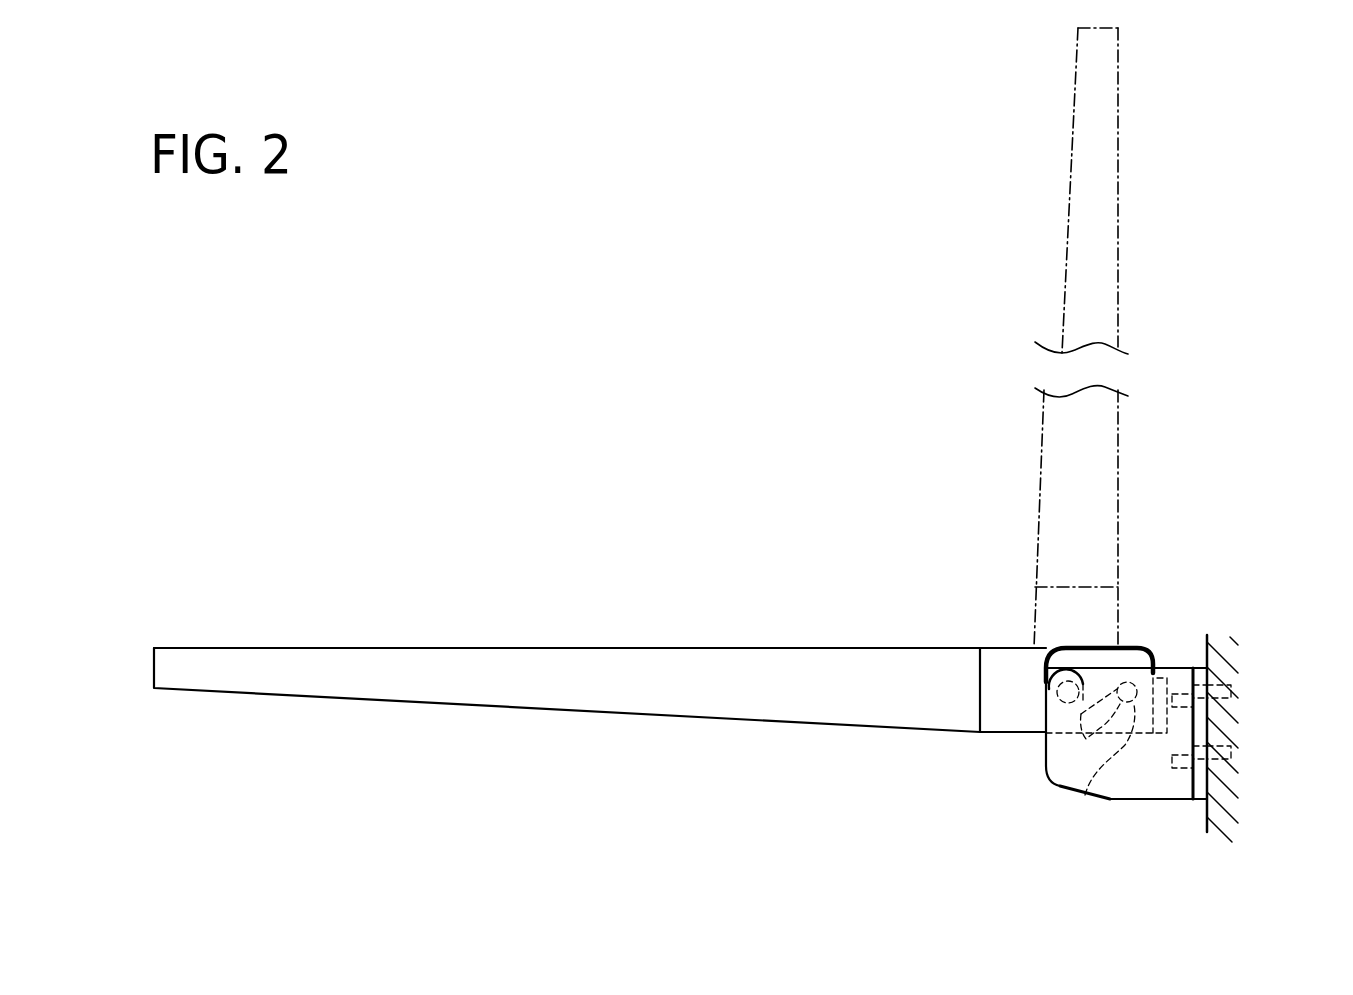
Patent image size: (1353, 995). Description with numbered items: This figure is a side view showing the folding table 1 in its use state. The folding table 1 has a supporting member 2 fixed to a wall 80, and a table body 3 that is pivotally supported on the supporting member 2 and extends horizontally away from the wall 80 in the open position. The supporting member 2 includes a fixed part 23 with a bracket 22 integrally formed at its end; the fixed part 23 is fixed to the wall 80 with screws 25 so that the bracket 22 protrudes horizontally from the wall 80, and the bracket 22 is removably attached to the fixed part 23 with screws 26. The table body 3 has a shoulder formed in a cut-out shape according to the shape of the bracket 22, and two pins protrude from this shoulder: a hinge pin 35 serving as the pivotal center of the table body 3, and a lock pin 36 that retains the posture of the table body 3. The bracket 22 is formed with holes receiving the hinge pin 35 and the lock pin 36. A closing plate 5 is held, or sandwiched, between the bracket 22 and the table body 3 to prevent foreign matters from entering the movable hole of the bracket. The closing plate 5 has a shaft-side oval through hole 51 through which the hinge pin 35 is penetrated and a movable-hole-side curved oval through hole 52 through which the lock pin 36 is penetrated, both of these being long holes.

The folding table 1 is at (590, 532).
The supporting member 2 is at (1158, 802).
The table body 3 is at (720, 662).
The closing plate 5 is at (1128, 647).
The bracket 22 is at (1128, 795).
The fixed part 23 is at (1200, 665).
The screw 25 is at (1214, 684).
The screw 26 is at (1206, 750).
The hinge pin 35 is at (1050, 690).
The lock pin 36 is at (1085, 795).
The shaft-side oval through hole 51 is at (1054, 672).
The movable-hole-side curved oval through hole 52 is at (1056, 703).
The wall 80 is at (1222, 640).